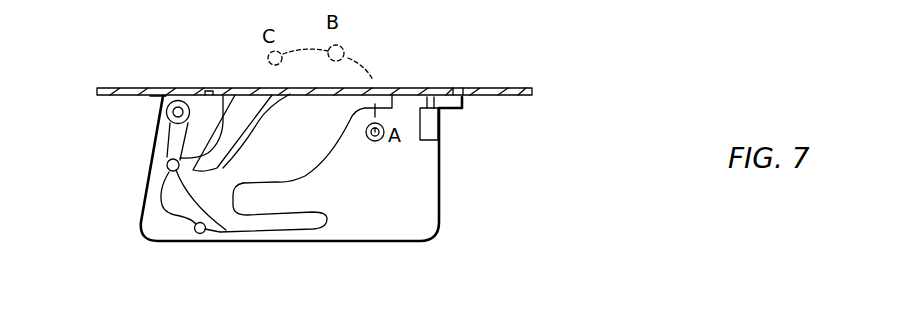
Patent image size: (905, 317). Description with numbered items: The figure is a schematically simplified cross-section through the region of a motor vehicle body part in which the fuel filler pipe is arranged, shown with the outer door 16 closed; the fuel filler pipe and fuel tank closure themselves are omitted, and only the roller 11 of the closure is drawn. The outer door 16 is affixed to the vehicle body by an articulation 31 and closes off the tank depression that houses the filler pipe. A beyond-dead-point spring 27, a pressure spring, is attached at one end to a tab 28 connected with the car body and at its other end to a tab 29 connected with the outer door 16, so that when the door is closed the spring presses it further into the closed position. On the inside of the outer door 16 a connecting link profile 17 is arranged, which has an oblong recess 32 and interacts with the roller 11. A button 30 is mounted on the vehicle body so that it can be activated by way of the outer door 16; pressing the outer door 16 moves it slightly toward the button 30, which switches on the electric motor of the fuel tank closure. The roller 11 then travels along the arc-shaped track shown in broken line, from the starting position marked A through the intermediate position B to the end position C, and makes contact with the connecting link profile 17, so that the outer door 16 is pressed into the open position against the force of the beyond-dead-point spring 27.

The roller 11 is at (380, 142).
The outer door 16 is at (400, 90).
The connecting link profile 17 is at (220, 190).
The beyond-dead-point spring 27 is at (160, 210).
The tab 28 is at (200, 234).
The tab 29 is at (166, 170).
The button 30 is at (430, 122).
The articulation 31 is at (170, 111).
The oblong recess 32 is at (273, 195).